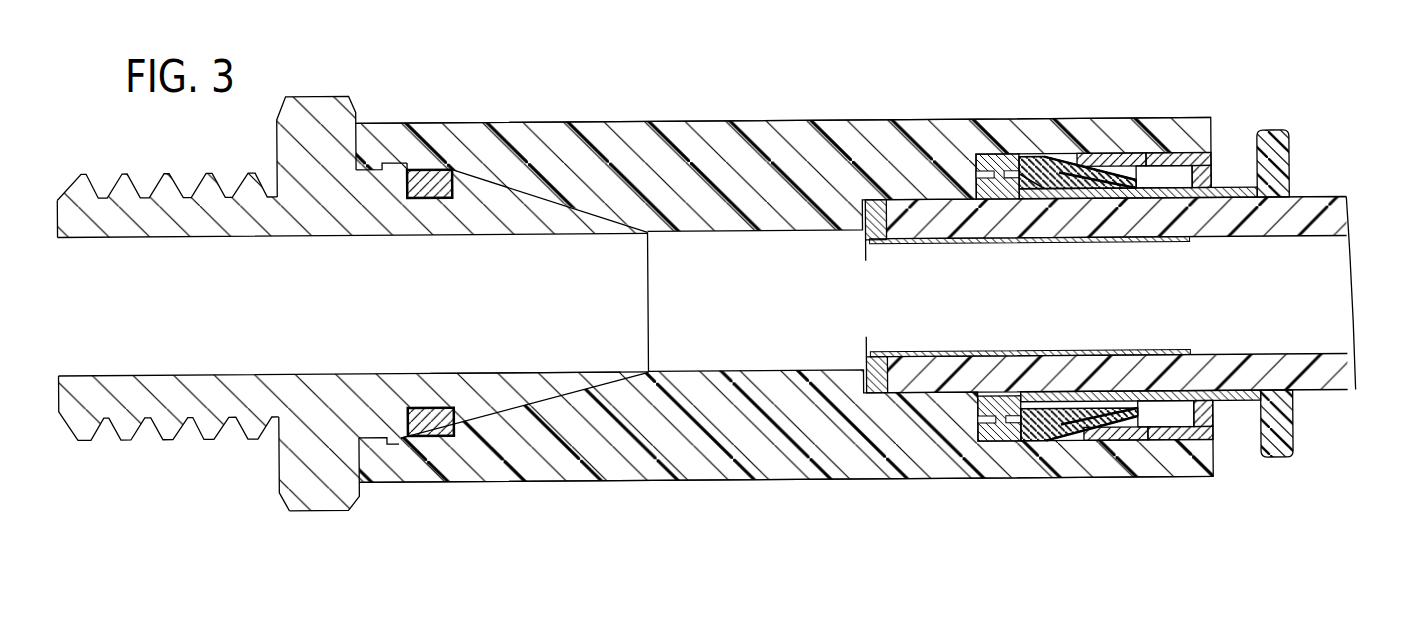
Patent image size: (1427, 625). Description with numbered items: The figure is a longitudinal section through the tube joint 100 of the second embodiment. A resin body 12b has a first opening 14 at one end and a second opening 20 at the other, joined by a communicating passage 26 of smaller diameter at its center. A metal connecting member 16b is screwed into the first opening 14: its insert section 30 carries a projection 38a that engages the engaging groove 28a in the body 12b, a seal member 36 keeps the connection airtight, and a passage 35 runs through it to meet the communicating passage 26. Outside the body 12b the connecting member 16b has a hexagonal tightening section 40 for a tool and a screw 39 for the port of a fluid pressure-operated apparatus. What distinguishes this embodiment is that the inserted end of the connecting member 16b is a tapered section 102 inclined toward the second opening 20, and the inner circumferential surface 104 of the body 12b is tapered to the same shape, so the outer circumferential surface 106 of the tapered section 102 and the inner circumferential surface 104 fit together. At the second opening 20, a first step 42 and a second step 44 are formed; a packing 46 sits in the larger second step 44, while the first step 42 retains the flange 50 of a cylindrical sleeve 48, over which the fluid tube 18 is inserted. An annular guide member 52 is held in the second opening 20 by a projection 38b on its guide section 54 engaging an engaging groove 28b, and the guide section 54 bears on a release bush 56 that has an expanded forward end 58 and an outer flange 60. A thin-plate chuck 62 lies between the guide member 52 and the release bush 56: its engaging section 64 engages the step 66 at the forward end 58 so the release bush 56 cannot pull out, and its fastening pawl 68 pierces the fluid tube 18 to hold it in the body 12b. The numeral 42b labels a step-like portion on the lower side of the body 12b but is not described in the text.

The tube joint 100 is at (1287, 70).
The body 12b is at (738, 115).
The first opening 14 is at (369, 166).
The connecting member 16b is at (278, 509).
The fluid tube 18 is at (1333, 221).
The second opening 20 is at (1197, 156).
The communicating passage 26 is at (680, 302).
The engaging groove 28a is at (406, 158).
The engaging groove 28b is at (1147, 156).
The insert section 30 is at (387, 406).
The passage 35 is at (240, 244).
The seal member 36 is at (445, 176).
The projection 38a is at (398, 443).
The projection 38b is at (1135, 446).
The screw 39 is at (160, 438).
The tightening section 40 is at (315, 113).
The first step 42 is at (916, 201).
The sleeve 42b is at (978, 406).
The second step 44 is at (1050, 164).
The packing 46 is at (1000, 174).
The sleeve 48 is at (985, 245).
The flange 50 is at (866, 245).
The guide member 52 is at (1190, 446).
The guide section 54 is at (1212, 421).
The release bush 56 is at (1305, 440).
The forward end 58 is at (1098, 398).
The flange 60 is at (1280, 147).
The chuck 62 is at (1048, 445).
The engaging section 64 is at (1113, 198).
The step 66 is at (1092, 195).
The fastening pawl 68 is at (1025, 200).
The tapered section 102 is at (550, 212).
The inner circumferential surface 104 is at (583, 394).
The outer circumferential surface 106 is at (525, 426).